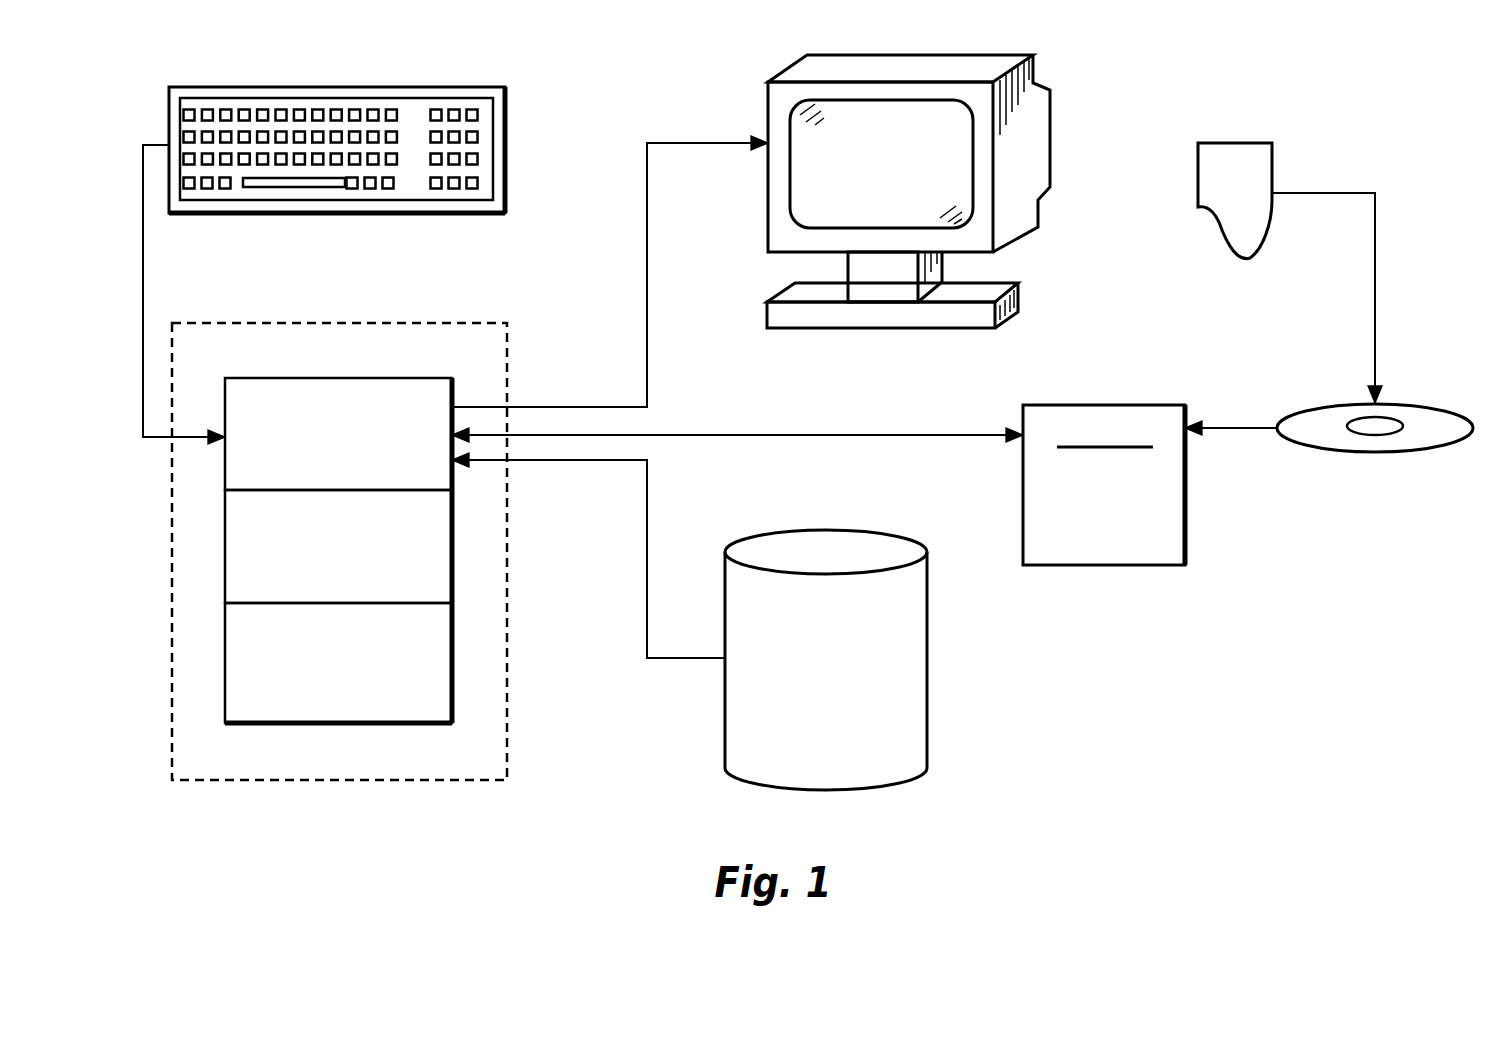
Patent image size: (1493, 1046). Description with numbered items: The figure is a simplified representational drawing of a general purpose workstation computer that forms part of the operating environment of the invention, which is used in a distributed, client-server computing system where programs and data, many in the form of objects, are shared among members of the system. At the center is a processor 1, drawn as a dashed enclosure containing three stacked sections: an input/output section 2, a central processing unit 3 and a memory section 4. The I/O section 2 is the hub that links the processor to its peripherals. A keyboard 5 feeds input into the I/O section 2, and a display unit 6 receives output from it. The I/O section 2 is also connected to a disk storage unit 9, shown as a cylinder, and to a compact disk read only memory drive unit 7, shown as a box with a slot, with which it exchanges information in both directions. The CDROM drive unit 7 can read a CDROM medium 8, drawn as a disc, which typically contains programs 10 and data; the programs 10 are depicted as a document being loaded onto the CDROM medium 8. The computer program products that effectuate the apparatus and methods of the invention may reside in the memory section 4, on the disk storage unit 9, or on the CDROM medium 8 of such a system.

The processor 1 is at (457, 323).
The input/output section 2 is at (313, 383).
The central processing unit 3 is at (452, 562).
The memory section 4 is at (452, 703).
The keyboard 5 is at (483, 87).
The display unit 6 is at (978, 66).
The CDROM drive unit 7 is at (1053, 405).
The CDROM medium 8 is at (1348, 407).
The disk storage unit 9 is at (927, 630).
The programs 10 is at (1213, 153).